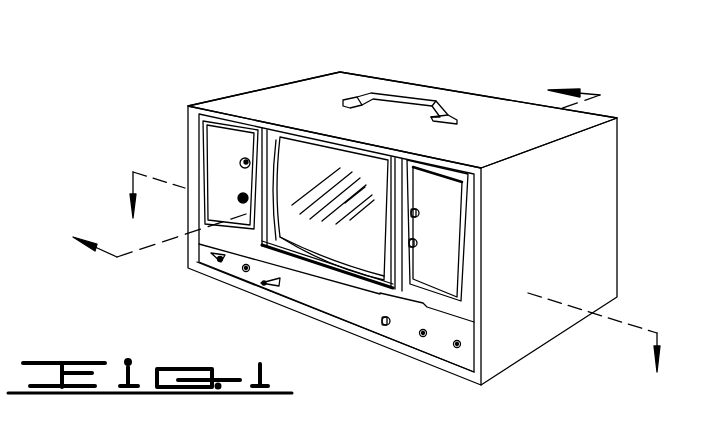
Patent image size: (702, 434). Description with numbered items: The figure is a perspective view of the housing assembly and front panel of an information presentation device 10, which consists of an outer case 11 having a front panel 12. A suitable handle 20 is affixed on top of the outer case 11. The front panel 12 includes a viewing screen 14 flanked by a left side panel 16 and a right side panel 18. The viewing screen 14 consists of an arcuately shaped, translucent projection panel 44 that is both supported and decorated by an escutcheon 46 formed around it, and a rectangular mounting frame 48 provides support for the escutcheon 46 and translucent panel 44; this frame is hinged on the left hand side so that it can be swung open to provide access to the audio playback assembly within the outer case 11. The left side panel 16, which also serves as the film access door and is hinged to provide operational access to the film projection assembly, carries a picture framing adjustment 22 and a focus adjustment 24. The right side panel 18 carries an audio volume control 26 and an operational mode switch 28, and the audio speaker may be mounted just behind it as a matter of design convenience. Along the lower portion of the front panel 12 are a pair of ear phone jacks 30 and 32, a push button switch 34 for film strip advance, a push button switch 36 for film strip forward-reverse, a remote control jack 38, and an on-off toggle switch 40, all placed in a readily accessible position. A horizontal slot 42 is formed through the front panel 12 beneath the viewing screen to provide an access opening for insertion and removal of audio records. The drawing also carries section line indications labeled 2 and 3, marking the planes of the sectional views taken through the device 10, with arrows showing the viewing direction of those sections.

The information presentation device 10 is at (482, 41).
The outer case 11 is at (501, 130).
The front panel 12 is at (307, 293).
The viewing screen 14 is at (303, 178).
The left side panel 16 is at (213, 180).
The right side panel 18 is at (433, 224).
The handle 20 is at (437, 105).
The picture framing adjustment 22 is at (242, 158).
The focus adjustment 24 is at (238, 198).
The audio volume control 26 is at (419, 211).
The operational mode switch 28 is at (418, 245).
The ear phone jack 30 is at (420, 337).
The ear phone jack 32 is at (455, 348).
The push button switch 34 is at (383, 325).
The push button switch 36 is at (266, 286).
The remote control jack 38 is at (243, 271).
The on-off toggle switch 40 is at (216, 263).
The horizontal slot 42 is at (378, 289).
The translucent projection panel 44 is at (363, 162).
The escutcheon 46 is at (358, 275).
The rectangular mounting frame 48 is at (400, 284).
The section line 2- 2 is at (393, 283).
The section line 3- 3 is at (329, 168).